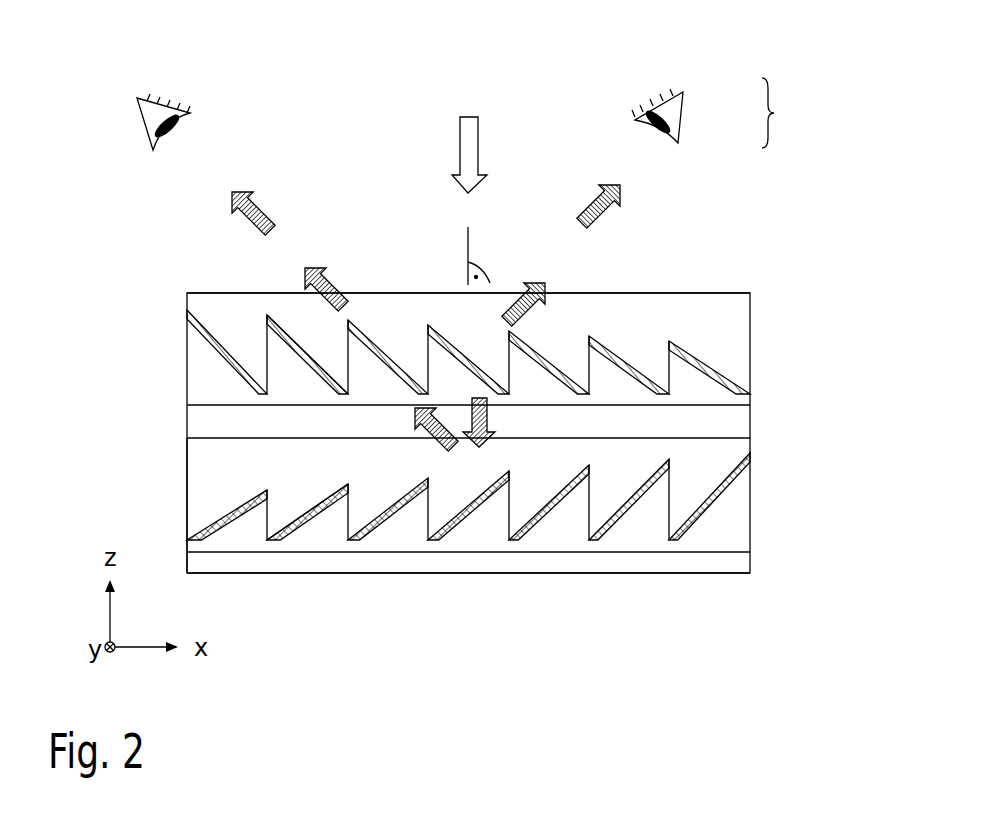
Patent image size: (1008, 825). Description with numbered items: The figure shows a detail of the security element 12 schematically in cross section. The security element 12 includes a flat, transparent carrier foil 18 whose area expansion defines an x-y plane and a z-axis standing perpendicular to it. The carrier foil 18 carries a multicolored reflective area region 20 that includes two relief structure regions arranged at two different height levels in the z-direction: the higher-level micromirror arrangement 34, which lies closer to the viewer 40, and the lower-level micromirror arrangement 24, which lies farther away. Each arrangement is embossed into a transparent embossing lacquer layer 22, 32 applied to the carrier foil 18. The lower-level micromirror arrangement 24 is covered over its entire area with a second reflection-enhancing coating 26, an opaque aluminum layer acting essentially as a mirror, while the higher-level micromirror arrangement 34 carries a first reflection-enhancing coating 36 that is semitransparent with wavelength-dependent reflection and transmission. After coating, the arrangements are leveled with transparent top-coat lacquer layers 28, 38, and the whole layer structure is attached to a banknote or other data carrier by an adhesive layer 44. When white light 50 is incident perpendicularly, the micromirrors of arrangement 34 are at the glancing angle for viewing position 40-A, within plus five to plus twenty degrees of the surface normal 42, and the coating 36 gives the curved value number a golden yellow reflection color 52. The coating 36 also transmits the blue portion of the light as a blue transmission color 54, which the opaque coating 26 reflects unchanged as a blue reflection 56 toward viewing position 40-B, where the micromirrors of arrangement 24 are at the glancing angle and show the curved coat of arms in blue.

The security element 12 is at (145, 238).
The carrier foil 18 is at (735, 425).
The multicolored reflective area region 20 is at (740, 258).
The embossing lacquer layer 22 is at (200, 480).
The lower-level micromirror arrangement 24 is at (317, 515).
The second reflection-enhancing coating 26 is at (748, 474).
The top-coat lacquer layer 28 is at (735, 519).
The embossing lacquer layer 32 is at (200, 373).
The higher-level micromirror arrangement 34 is at (293, 345).
The first reflection-enhancing coating 36 is at (745, 383).
The top-coat lacquer layer 38 is at (735, 331).
The viewer 40 is at (785, 113).
The viewing position 40-A is at (683, 113).
The viewing position 40-B is at (175, 105).
The surface normal 42 is at (465, 246).
The adhesive layer 44 is at (735, 567).
The white light 50 is at (480, 135).
The golden yellow reflection color 52 is at (610, 183).
The blue transmission color 54 is at (490, 422).
The blue reflection 56 is at (260, 212).